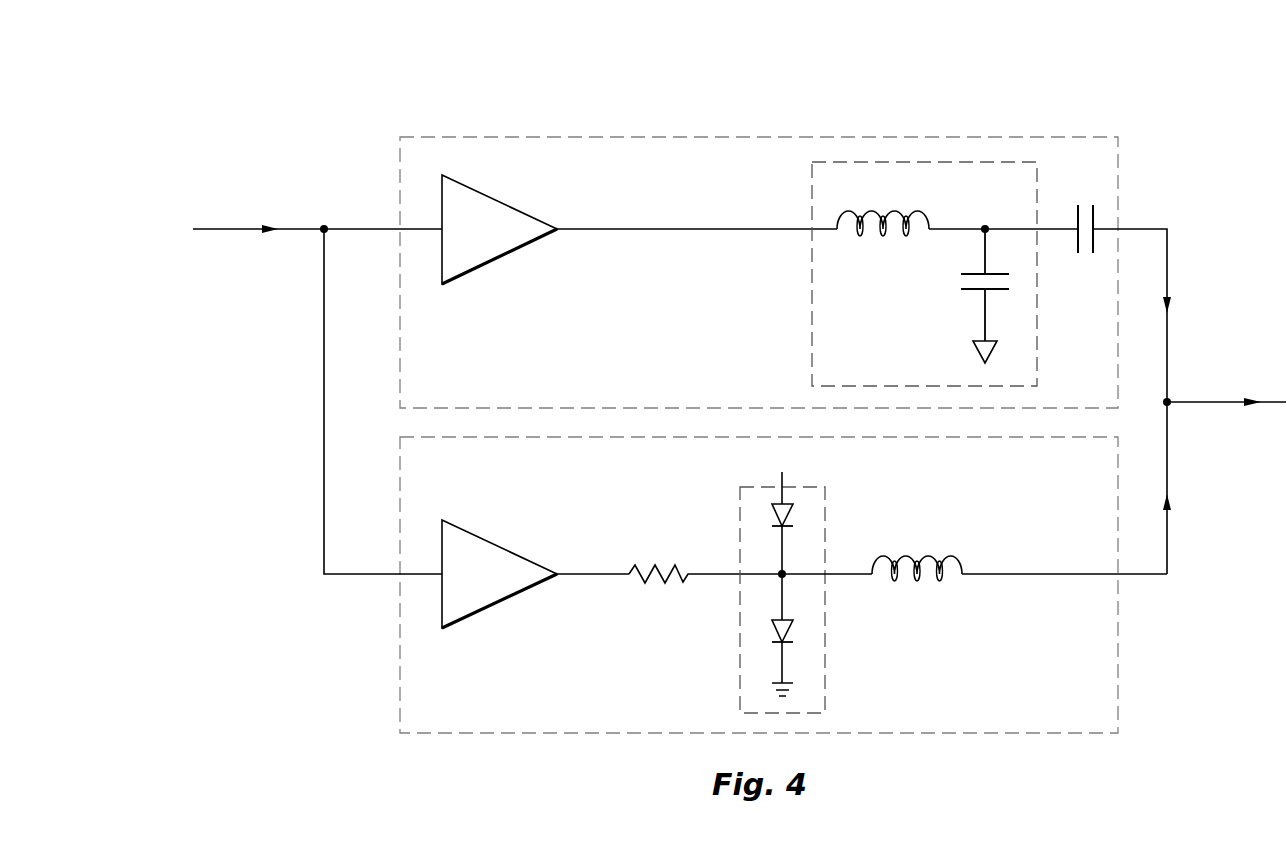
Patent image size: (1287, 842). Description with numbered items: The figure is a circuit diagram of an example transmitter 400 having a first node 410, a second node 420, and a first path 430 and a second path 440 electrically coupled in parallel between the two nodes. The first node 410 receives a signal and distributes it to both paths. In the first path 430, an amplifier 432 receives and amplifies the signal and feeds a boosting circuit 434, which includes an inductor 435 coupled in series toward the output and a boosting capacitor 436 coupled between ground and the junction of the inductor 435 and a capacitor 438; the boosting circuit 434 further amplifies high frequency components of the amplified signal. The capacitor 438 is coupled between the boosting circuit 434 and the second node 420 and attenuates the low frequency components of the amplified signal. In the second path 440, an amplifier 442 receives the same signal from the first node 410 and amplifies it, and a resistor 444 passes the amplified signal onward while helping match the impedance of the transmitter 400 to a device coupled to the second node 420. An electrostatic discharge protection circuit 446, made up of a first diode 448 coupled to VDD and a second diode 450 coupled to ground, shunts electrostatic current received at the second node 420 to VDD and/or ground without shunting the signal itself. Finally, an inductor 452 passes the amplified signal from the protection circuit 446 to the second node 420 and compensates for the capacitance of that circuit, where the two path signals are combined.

The transmitter 400 is at (1105, 86).
The first node 410 is at (324, 226).
The second node 420 is at (1168, 401).
The first path 430 is at (1118, 160).
The amplifier 432 is at (500, 240).
The boosting circuit 434 is at (812, 205).
The inductor 435 is at (856, 213).
The boosting capacitor 436 is at (960, 282).
The capacitor 438 is at (1095, 212).
The second path 440 is at (1118, 622).
The amplifier 442 is at (500, 585).
The resistor 444 is at (648, 566).
The electrostatic discharge protection (ESDP) circuit 446 is at (825, 690).
The first diode 448 is at (792, 520).
The second diode 450 is at (792, 633).
The inductor 452 is at (920, 556).